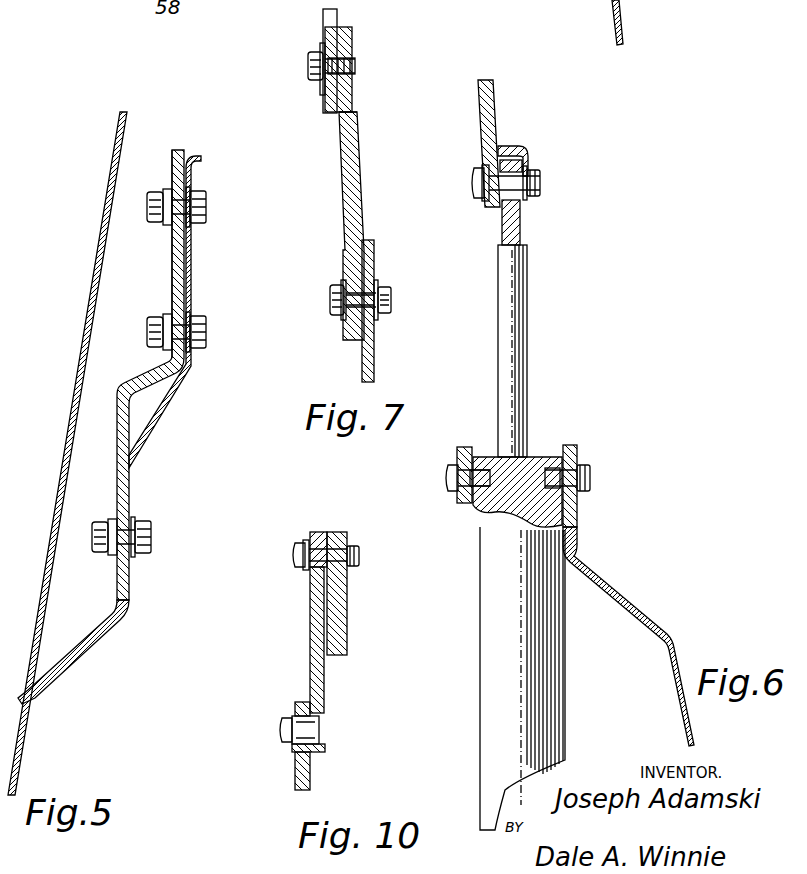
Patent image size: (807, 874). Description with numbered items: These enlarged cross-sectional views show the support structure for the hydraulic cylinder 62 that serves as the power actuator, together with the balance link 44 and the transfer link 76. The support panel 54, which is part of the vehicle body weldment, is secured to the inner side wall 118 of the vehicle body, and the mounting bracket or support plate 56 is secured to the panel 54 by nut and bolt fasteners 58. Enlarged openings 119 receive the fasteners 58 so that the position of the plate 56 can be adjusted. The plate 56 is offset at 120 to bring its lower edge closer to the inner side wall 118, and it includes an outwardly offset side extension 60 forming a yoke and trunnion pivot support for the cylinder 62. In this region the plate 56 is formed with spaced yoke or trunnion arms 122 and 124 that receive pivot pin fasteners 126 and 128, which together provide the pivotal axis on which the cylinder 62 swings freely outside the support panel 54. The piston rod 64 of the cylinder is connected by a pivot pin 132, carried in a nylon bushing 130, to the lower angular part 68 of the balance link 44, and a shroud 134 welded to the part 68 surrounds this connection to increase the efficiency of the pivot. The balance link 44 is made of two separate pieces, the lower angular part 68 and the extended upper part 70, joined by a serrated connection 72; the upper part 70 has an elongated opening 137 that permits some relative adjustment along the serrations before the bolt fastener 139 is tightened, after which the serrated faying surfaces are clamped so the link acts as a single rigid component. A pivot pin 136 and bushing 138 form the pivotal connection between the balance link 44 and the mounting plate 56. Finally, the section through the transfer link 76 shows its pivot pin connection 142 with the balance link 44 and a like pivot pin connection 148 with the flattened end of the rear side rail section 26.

In FIG. 10, the frame member 26 is at (340, 620).
In FIG. 7, the balance link 44 is at (367, 106).
In FIG. 10, the balance link 44 is at (300, 780).
In FIG. 6, the balance link 44 is at (504, 92).
In FIG. 5, the support panel 54 is at (80, 652).
In FIG. 6, the support panel 54 is at (640, 624).
In FIG. 5, the support plate 56 is at (128, 497).
In FIG. 7, the support plate 56 is at (372, 352).
In FIG. 5, the fasteners 58 is at (207, 209).
In FIG. 6, the outwardly offset side extension 60 is at (584, 446).
In FIG. 6, the hydraulic cylinder 62 is at (557, 712).
In FIG. 6, the piston rod 64 is at (519, 310).
In FIG. 7, the lower angular part 68 is at (349, 150).
In FIG. 7, the extended upper part 70 is at (323, 29).
In FIG. 7, the serrated connection 72 is at (343, 48).
In FIG. 10, the transfer link 76 is at (317, 632).
In FIG. 5, the inner side wall 118 is at (73, 417).
In FIG. 5, the enlarged openings 119 is at (181, 218).
In FIG. 5, the offset 120 is at (135, 388).
In FIG. 6, the trunnion arm 122 is at (578, 505).
In FIG. 6, the trunnion arm 124 is at (465, 448).
In FIG. 6, the pivot pin fastener 126 is at (590, 478).
In FIG. 6, the pivot pin fastener 128 is at (452, 484).
In FIG. 6, the nylon bushing 130 is at (522, 162).
In FIG. 6, the pivot pin 132 is at (540, 184).
In FIG. 6, the shroud 134 is at (505, 150).
In FIG. 7, the pivot pin 136 is at (347, 298).
In FIG. 7, the elongated opening 137 is at (327, 80).
In FIG. 7, the bushing 138 is at (356, 318).
In FIG. 7, the bolt fastener 139 is at (310, 73).
In FIG. 10, the pivot pin connection 142 is at (296, 730).
In FIG. 10, the pivot pin connection 148 is at (313, 554).